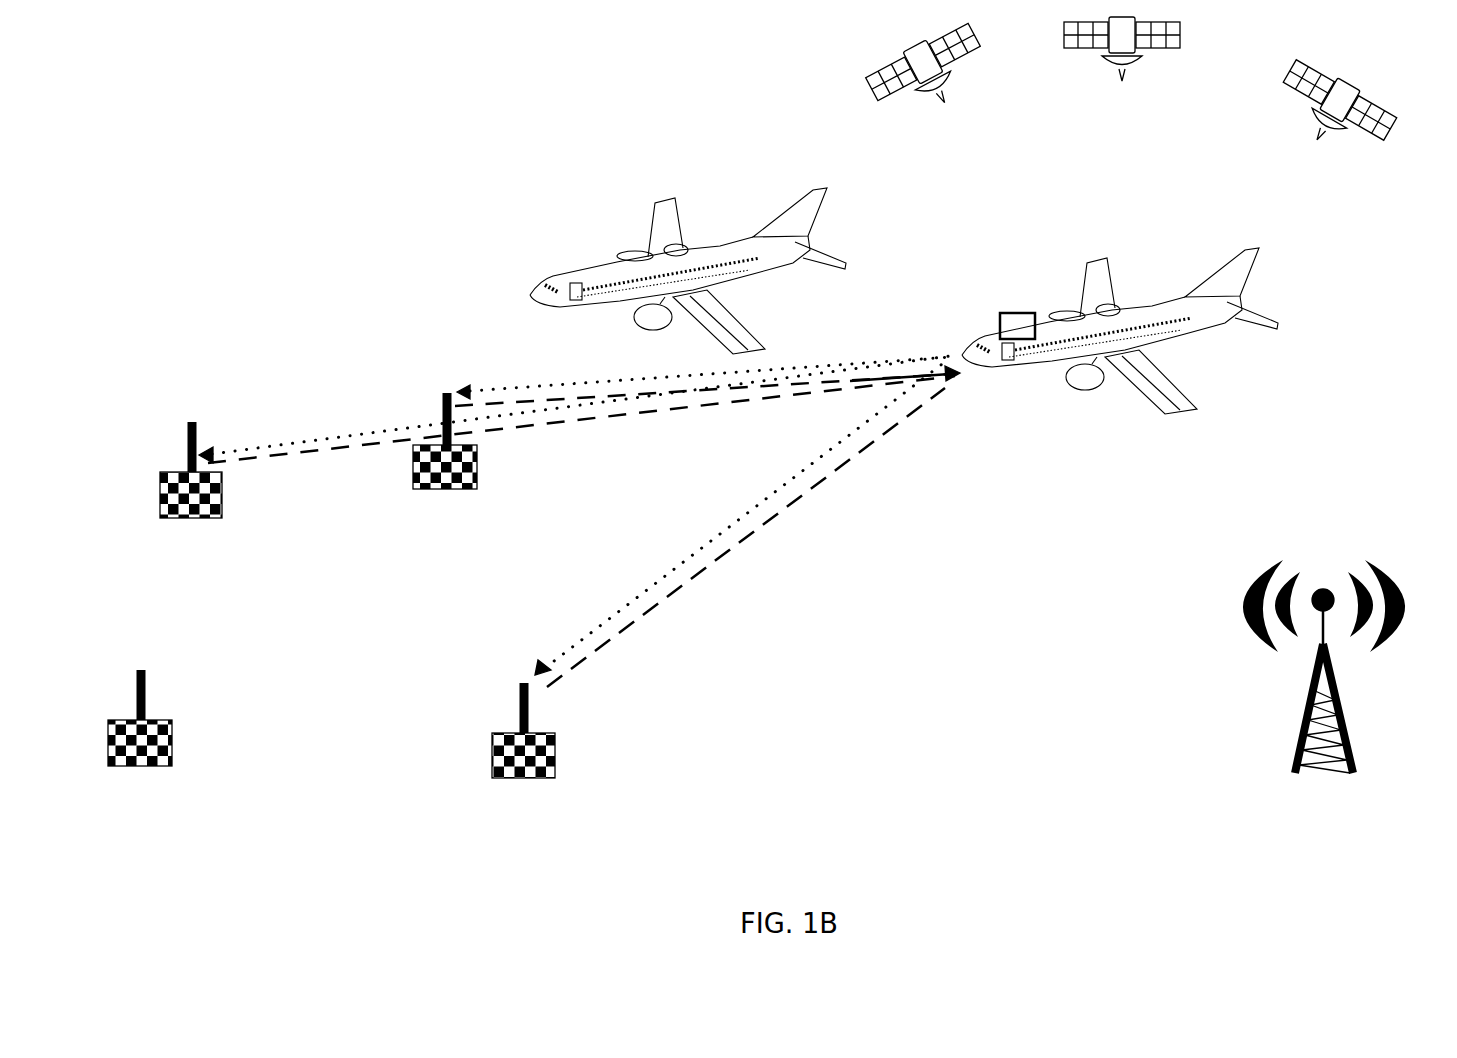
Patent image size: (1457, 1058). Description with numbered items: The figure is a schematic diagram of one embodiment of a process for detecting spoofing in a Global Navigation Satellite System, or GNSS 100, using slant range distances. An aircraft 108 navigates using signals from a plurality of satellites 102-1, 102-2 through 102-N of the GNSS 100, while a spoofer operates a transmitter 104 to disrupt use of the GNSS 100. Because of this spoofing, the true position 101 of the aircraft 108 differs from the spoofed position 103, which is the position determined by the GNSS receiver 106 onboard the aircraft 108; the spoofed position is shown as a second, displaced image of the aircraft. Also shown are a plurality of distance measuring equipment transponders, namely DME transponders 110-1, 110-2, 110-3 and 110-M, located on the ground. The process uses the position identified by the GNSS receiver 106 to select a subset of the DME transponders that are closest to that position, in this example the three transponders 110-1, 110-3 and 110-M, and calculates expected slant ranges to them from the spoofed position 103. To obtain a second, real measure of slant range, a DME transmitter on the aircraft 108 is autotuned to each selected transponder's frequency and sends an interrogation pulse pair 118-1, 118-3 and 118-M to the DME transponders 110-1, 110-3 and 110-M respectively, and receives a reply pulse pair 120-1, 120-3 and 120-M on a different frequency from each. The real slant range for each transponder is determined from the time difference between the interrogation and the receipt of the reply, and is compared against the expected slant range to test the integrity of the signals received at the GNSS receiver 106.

The Global Navigation Satellite System (GNSS) 100 is at (755, 62).
The satellite 102-1 is at (887, 97).
The satellite 102-2 is at (1085, 37).
The satellite 102-N is at (1370, 128).
The spoofed position 103 is at (548, 292).
The aircraft 108 is at (1193, 318).
The GNSS receiver 106 is at (1014, 313).
The true position 101 is at (985, 362).
The transmitter 104 is at (1347, 733).
The DME transponder 110-1 is at (520, 780).
The DME transponder 110-2 is at (142, 767).
The DME transponder 110-3 is at (200, 519).
The DME transponder 110-M is at (410, 463).
The interrogation pulse pair 118-1 is at (622, 612).
The interrogation pulse pair 118-3 is at (282, 440).
The interrogation pulse pair 118-M is at (508, 383).
The reply pulse pair 120-1 is at (628, 623).
The reply pulse pair 120-3 is at (247, 457).
The reply pulse pair 120-M is at (585, 397).